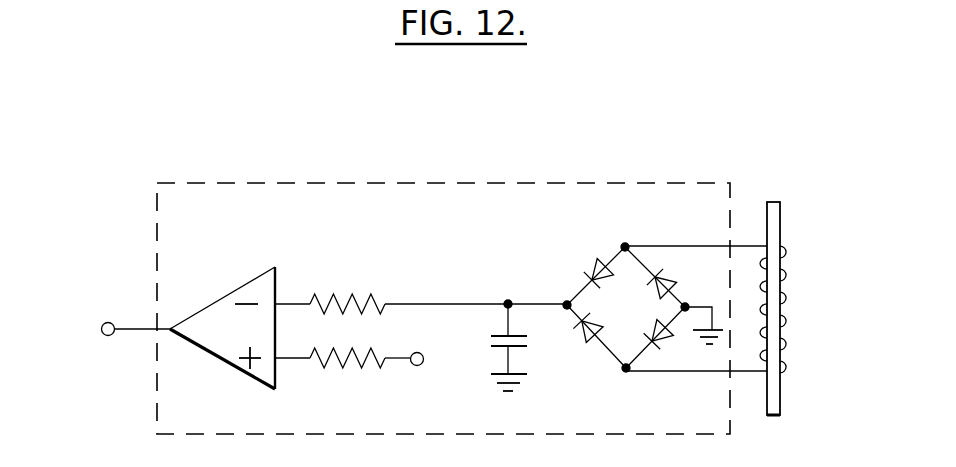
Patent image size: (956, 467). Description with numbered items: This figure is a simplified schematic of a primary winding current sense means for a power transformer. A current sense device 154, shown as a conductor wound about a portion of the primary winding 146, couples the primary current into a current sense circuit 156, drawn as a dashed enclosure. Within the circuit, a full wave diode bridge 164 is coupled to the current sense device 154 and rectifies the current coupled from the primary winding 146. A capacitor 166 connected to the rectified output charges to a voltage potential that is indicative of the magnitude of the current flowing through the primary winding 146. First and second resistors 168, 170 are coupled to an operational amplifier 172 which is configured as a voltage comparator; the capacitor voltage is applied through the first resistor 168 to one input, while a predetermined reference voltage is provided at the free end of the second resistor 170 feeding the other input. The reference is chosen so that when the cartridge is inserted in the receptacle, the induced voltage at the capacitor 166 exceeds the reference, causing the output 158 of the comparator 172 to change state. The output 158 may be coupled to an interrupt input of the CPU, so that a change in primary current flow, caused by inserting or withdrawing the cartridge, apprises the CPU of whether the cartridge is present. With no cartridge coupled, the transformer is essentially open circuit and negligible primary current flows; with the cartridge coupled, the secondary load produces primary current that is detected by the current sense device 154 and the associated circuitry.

The primary winding 146 is at (782, 218).
The current sense device 154 is at (789, 320).
The current sense circuit 156 is at (363, 183).
The output 158 is at (135, 325).
The full wave diode bridge 164 is at (619, 251).
The capacitor 166 is at (527, 342).
The first resistor 168 is at (338, 296).
The second resistor 170 is at (347, 369).
The operational amplifier 172 is at (231, 293).